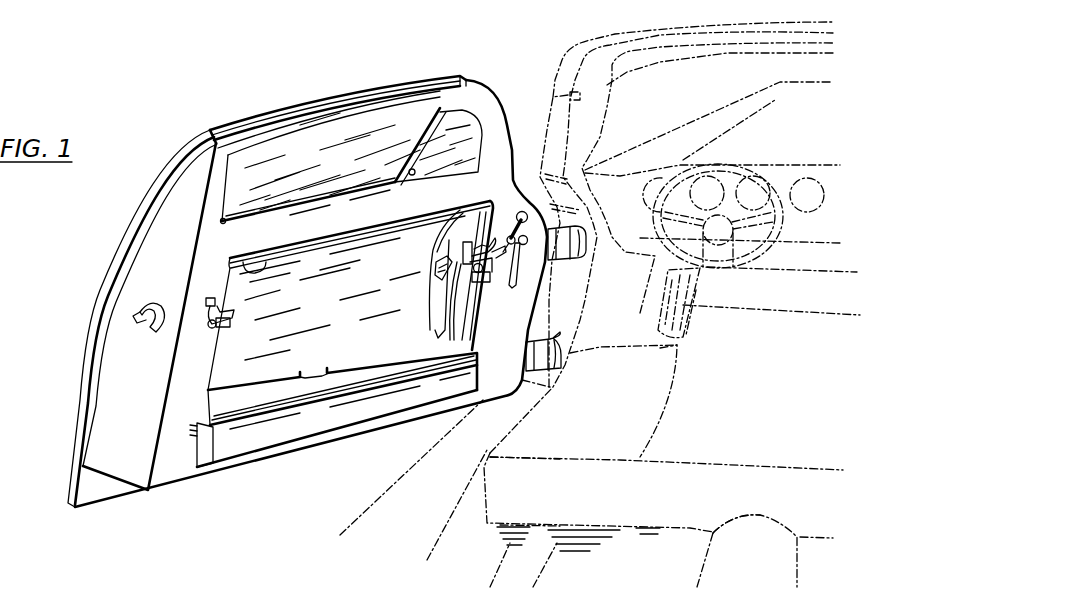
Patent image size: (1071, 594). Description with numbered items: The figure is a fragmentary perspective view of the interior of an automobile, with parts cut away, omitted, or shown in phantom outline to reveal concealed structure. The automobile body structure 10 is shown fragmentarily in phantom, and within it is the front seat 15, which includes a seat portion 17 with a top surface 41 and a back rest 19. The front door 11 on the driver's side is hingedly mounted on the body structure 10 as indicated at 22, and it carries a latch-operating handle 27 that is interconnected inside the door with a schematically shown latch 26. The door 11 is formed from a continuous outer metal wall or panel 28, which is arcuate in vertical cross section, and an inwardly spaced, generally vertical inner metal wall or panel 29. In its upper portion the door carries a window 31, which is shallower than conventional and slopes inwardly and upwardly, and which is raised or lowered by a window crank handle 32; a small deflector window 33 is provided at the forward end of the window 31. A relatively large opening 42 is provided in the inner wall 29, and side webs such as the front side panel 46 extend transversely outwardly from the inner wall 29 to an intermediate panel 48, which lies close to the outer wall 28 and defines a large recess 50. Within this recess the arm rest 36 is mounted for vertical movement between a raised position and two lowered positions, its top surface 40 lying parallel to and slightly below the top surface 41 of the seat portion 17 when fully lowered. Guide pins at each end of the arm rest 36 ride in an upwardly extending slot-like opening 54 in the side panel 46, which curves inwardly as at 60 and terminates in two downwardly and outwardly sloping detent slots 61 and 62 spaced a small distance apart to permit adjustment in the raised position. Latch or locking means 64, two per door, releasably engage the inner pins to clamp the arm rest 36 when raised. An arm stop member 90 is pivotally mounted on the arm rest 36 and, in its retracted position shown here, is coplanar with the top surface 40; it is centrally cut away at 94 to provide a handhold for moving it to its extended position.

The automobile body structure 10 is at (523, 92).
The front door 11 is at (221, 112).
The front seat 15 is at (738, 493).
The seat portion 17 is at (530, 495).
The back rest 19 is at (670, 368).
The hinge mounting 22 is at (579, 243).
The door lock or latch 26 is at (157, 333).
The latch-operating handle 27 is at (527, 267).
The outer metal wall or panel 28 is at (92, 318).
The inner metal wall or panel 29 is at (176, 470).
The window 31 is at (300, 160).
The window crank handle 32 is at (517, 208).
The deflector window 33 is at (447, 128).
The arm rest 36 is at (323, 420).
The top surface of arm rest 40 is at (387, 366).
The top surface of seat portion 41 is at (550, 447).
The opening 42 is at (266, 266).
The front side web or panel 46 is at (463, 334).
The intermediate panel 48 is at (332, 262).
The recess 50 is at (314, 329).
The slot-like opening 54 is at (432, 316).
The inwardly curved portion of slot 60 is at (445, 296).
The upper detent slot 61 is at (443, 228).
The upper detent slot 62 is at (434, 268).
The latch or locking means 64 is at (492, 298).
The arm stop member 90 is at (250, 393).
The cut-away handhold 94 is at (313, 372).